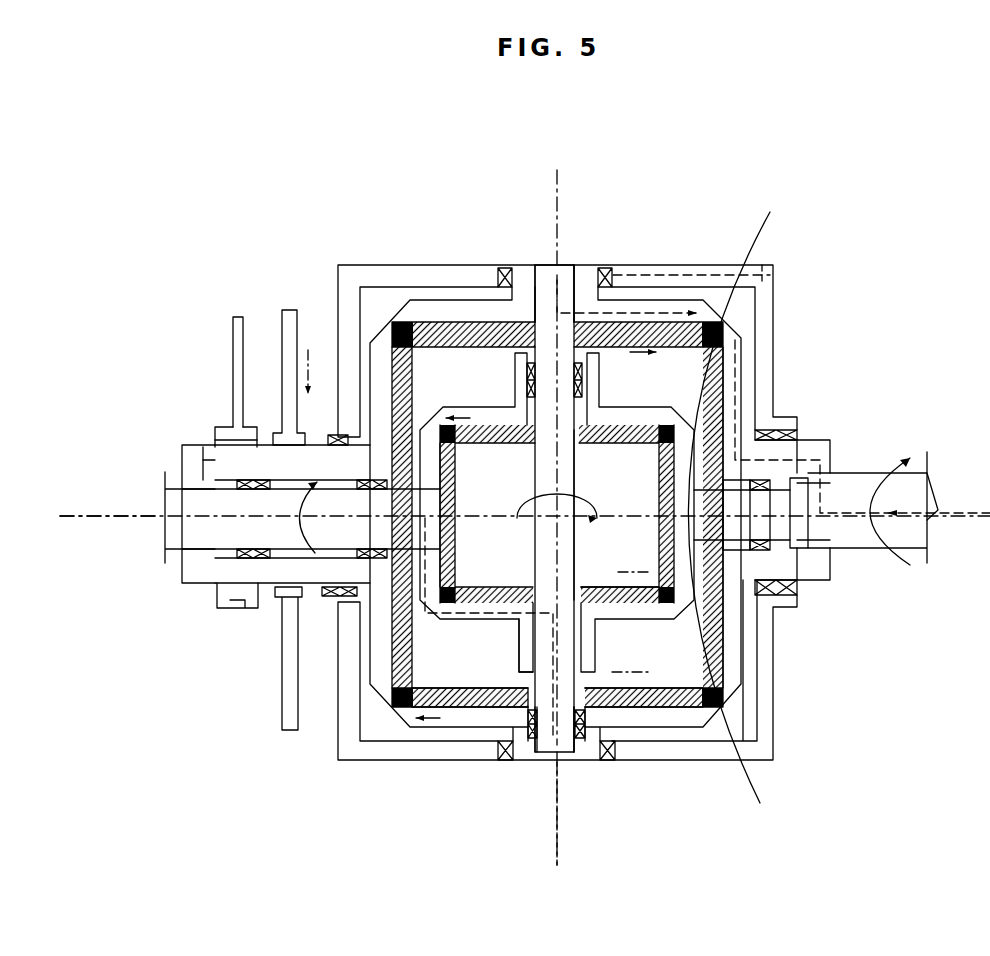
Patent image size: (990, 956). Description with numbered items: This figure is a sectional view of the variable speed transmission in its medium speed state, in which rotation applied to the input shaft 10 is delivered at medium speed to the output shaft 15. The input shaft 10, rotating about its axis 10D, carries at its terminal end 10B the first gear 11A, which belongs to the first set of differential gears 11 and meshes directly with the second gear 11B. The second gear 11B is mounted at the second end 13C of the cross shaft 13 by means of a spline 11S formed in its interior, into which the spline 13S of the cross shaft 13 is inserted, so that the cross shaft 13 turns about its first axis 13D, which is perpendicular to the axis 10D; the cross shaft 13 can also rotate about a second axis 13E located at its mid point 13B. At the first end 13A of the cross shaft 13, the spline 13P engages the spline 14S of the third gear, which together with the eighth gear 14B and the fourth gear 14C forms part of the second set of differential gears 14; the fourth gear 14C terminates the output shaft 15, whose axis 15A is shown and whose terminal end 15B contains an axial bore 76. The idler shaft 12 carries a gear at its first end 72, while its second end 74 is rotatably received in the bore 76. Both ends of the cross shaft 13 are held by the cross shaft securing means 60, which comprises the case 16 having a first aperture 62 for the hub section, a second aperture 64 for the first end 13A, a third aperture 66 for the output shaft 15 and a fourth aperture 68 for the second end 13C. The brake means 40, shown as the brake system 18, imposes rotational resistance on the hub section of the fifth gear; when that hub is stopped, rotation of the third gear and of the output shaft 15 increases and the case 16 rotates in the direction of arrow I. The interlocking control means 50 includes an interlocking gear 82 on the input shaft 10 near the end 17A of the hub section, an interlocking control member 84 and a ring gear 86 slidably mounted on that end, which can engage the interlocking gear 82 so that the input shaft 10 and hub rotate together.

The input shaft 10 is at (182, 502).
The terminal end of the input shaft 10B is at (446, 533).
The axis of the input shaft 10D is at (106, 522).
The first set of differential gears 11 is at (684, 423).
The first gear 11A is at (455, 494).
The second gear 11B is at (618, 576).
The spline of the second gear 11S is at (516, 662).
The idler shaft 12 is at (787, 513).
The cross shaft 13 is at (564, 768).
The first end of the cross shaft 13A is at (544, 300).
The mid point of the cross shaft 13B is at (565, 508).
The second end of the cross shaft 13C is at (548, 737).
The first axis of the cross shaft 13D is at (560, 847).
The second axis of the cross shaft 13E is at (598, 520).
The spline of the cross shaft 13P is at (541, 297).
The spline of the cross shaft 13S is at (571, 665).
The second set of differential gears 14 is at (737, 307).
The eighth gear 14B is at (452, 688).
The fourth gear 14C is at (702, 635).
The spline of the third gear 14S is at (575, 297).
The output shaft 15 is at (866, 540).
The axis of the output shaft 15A is at (960, 513).
The terminal end of the output shaft 15B is at (822, 585).
The case 16 is at (683, 258).
The end of the hub section 17A is at (214, 462).
The brake system 18 is at (289, 308).
The brake means 40 is at (288, 193).
The interlocking control means 50 is at (233, 318).
The cross shaft securing means 60 is at (705, 180).
The first aperture 62 is at (315, 598).
The second aperture 64 is at (605, 272).
The third aperture 66 is at (798, 432).
The fourth aperture 68 is at (602, 758).
The first end of the idler shaft 72 is at (738, 513).
The second end of the idler shaft 74 is at (790, 545).
The axial bore 76 is at (800, 497).
The interlocking gear 82 is at (188, 457).
The interlocking control member 84 is at (234, 343).
The ring gear 86 is at (222, 431).
The arrow I is at (764, 217).